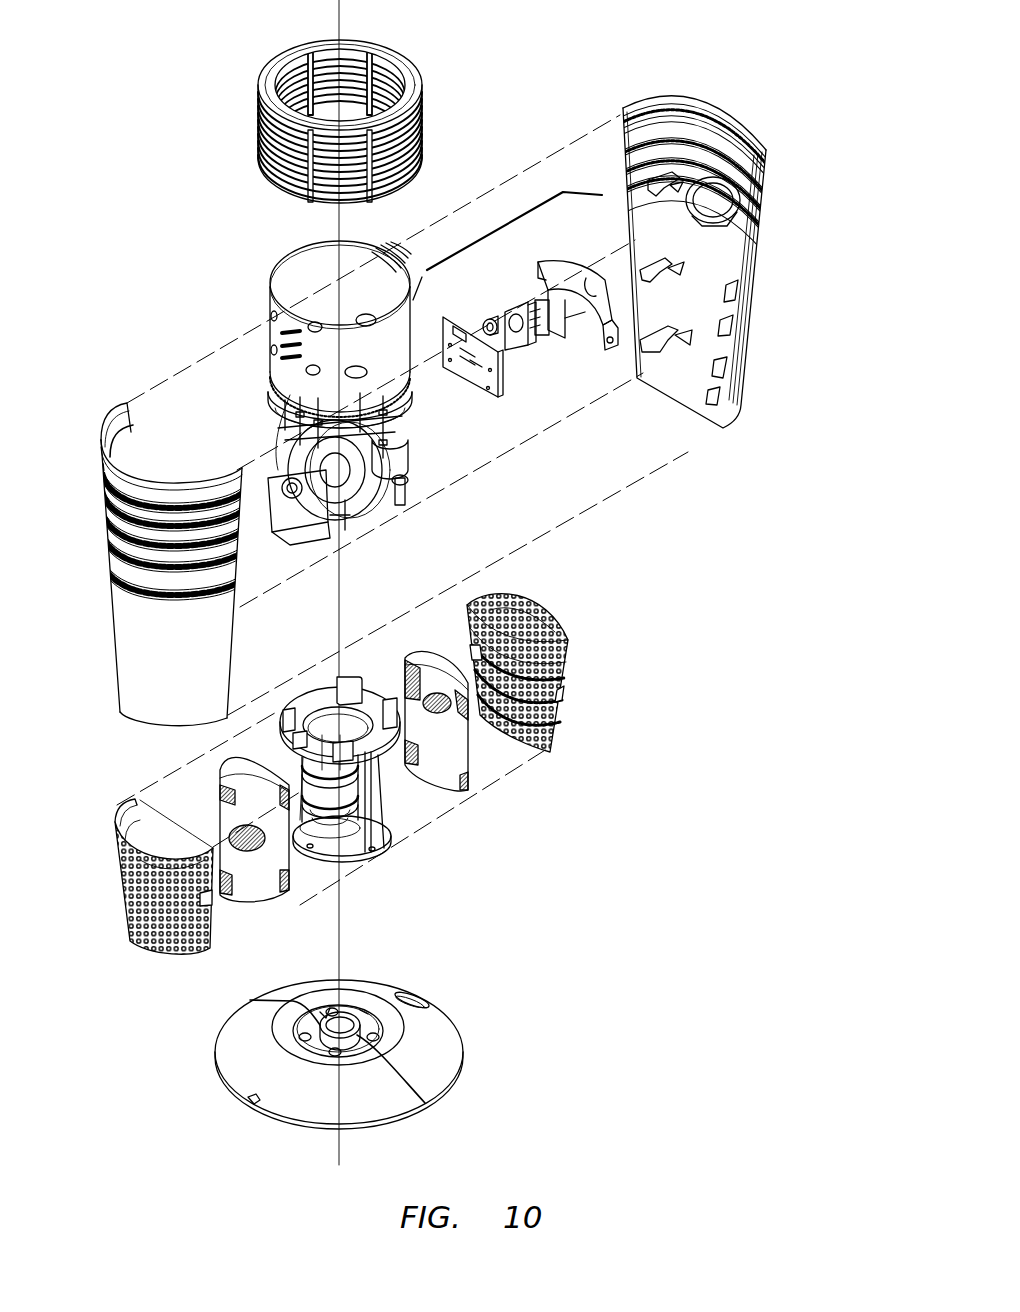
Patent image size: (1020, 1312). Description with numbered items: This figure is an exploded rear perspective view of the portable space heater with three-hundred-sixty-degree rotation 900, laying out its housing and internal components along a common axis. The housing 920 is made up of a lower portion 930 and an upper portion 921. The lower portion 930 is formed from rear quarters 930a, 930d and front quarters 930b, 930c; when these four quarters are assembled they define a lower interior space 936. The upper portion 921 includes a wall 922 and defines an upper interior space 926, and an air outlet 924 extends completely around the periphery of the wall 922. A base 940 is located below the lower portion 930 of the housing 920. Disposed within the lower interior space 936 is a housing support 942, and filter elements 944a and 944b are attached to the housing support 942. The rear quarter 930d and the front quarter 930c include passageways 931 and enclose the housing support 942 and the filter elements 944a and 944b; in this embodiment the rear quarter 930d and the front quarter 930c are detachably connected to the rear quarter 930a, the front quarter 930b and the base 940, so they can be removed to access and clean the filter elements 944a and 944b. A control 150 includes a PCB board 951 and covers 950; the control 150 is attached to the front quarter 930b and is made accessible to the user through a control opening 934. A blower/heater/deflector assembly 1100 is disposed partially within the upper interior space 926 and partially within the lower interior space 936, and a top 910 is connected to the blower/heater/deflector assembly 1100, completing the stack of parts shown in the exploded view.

The control 150 is at (507, 246).
The portable space heater with 360° rotation 900 is at (726, 1028).
The top 910 is at (277, 383).
The housing 920 is at (403, 472).
The upper portion 921 is at (244, 120).
The wall 922 is at (262, 128).
The air outlet 924 is at (292, 175).
The upper interior space 926 is at (332, 78).
The lower portion 930 is at (485, 598).
The rear quarter 930a is at (130, 712).
The front quarter 930b is at (768, 262).
The front quarter 930c is at (572, 702).
The rear quarter 930d is at (133, 940).
The passageways 931 is at (528, 618).
The control opening 934 is at (745, 207).
The lower interior space 936 is at (693, 320).
The base 940 is at (463, 1040).
The housing support 942 is at (387, 780).
The filter element 944a is at (236, 895).
The filter element 944b is at (473, 740).
The covers 950 is at (497, 307).
The PCB board 951 is at (468, 337).
The blower/heater/deflector assembly 1100 is at (267, 347).